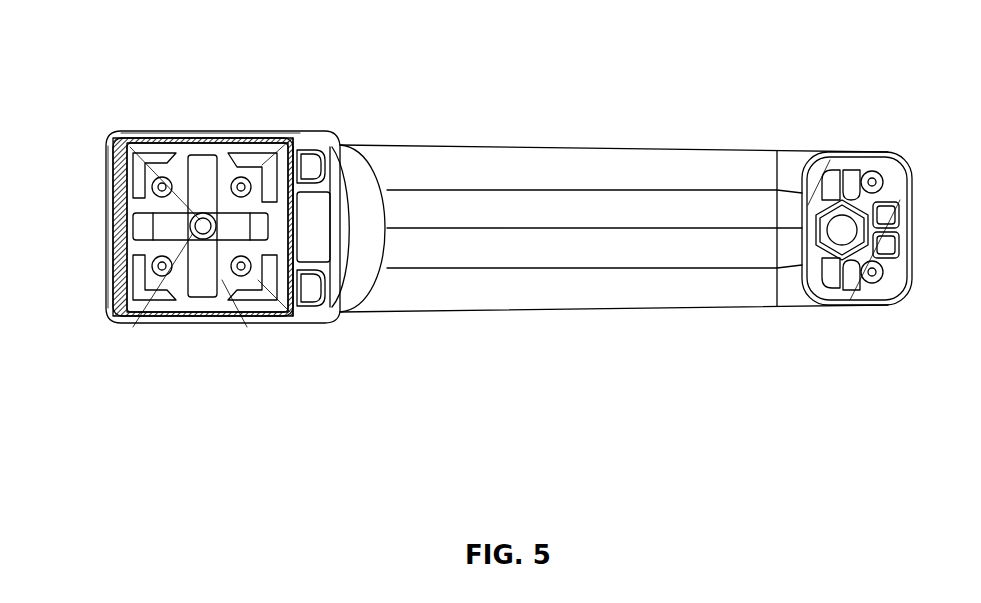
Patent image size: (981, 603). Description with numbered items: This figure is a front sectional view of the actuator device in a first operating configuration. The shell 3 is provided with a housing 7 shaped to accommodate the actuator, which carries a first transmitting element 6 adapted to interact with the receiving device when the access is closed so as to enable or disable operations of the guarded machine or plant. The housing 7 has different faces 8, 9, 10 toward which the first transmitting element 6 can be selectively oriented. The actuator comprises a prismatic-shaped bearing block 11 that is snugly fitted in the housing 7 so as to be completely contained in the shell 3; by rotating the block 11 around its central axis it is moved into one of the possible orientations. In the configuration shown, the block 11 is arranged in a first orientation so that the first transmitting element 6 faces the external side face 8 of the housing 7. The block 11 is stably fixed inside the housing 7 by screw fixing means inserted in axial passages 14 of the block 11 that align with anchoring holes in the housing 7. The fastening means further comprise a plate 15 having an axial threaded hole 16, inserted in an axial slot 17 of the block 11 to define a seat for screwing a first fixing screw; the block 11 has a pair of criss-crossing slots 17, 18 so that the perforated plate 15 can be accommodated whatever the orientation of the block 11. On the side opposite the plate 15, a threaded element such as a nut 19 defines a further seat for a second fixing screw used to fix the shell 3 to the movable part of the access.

The shell 3 is at (678, 170).
The first transmitting element 6 is at (108, 275).
The housing 7 is at (308, 244).
The external side face 8 is at (106, 180).
The face 9 is at (243, 325).
The face 10 is at (200, 152).
The bearing block 11 is at (230, 150).
The axial passages 14 is at (241, 187).
The plate 15 is at (140, 325).
The axial threaded hole 16 is at (186, 323).
The axial slot 17 is at (145, 231).
The slot 18 is at (190, 163).
The nut 19 is at (837, 303).